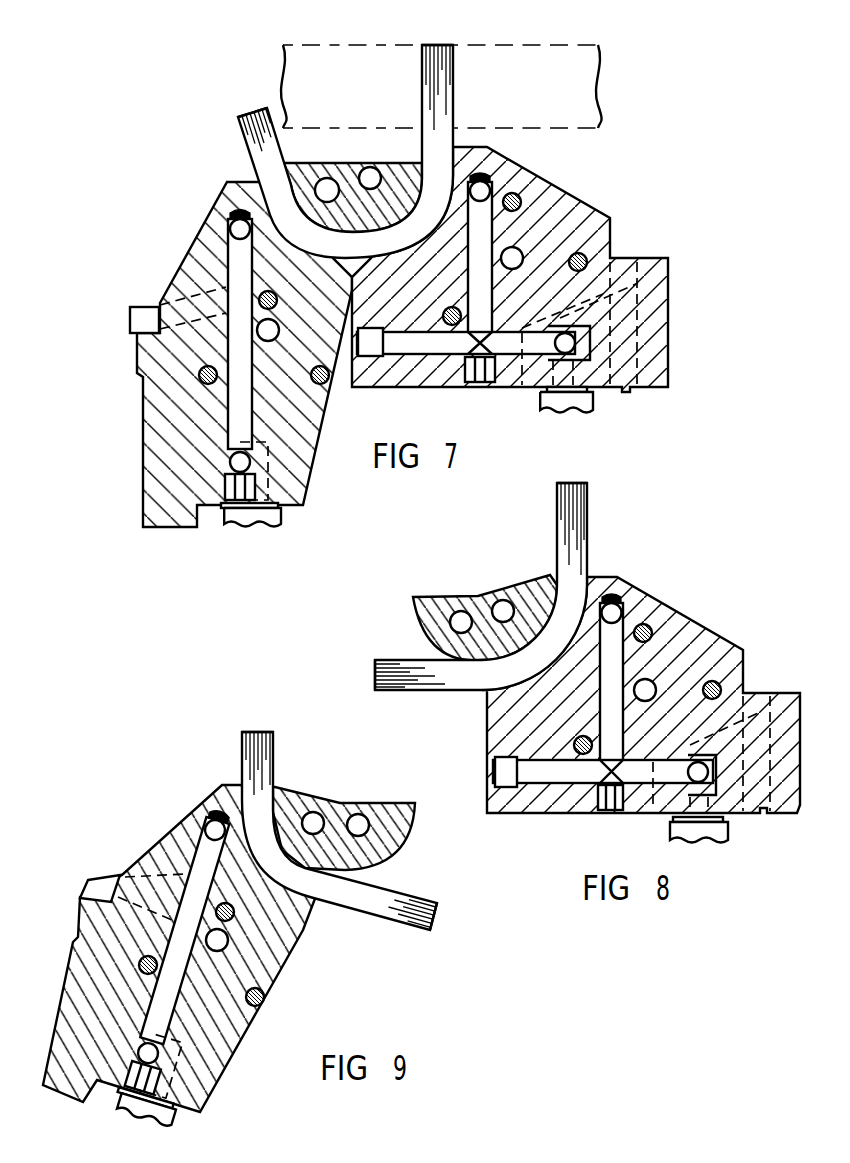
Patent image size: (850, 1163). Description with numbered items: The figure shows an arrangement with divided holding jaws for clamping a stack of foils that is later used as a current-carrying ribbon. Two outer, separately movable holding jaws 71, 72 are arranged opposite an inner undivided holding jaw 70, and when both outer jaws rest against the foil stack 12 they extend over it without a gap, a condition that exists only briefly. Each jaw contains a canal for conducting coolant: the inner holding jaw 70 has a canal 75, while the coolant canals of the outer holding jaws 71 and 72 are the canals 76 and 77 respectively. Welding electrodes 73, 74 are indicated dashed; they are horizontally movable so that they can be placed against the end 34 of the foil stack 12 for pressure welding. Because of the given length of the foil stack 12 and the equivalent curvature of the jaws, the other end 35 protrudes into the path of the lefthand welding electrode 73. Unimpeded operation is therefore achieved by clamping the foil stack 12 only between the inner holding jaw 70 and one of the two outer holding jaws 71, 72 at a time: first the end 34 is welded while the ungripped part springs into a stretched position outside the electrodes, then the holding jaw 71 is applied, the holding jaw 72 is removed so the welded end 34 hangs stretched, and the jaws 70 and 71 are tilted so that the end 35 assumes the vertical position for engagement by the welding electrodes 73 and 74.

In FIG. 7, the foil stack 12 is at (237, 143).
In FIG. 8, the foil stack 12 is at (556, 545).
In FIG. 9, the foil stack 12 is at (340, 908).
In FIG. 7, the end of the foil stack 34 is at (433, 55).
In FIG. 8, the end of the foil stack 34 is at (578, 493).
In FIG. 9, the end of the foil stack 34 is at (422, 912).
In FIG. 7, the end of the foil stack 35 is at (255, 112).
In FIG. 8, the end of the foil stack 35 is at (390, 662).
In FIG. 9, the end of the foil stack 35 is at (246, 745).
In FIG. 7, the inner holding jaw 70 is at (320, 162).
In FIG. 8, the inner holding jaw 70 is at (475, 581).
In FIG. 9, the inner holding jaw 70 is at (373, 804).
In FIG. 7, the outer holding jaw 71 is at (200, 240).
In FIG. 9, the outer holding jaw 71 is at (186, 814).
In FIG. 7, the outer holding jaw 72 is at (624, 196).
In FIG. 8, the outer holding jaw 72 is at (753, 626).
In FIG. 7, the welding electrode 73 is at (356, 60).
In FIG. 7, the welding electrode 74 is at (521, 58).
In FIG. 7, the canal 75 is at (370, 167).
In FIG. 7, the coolant canal 76 is at (247, 382).
In FIG. 9, the coolant canal 76 is at (187, 966).
In FIG. 7, the coolant canal 77 is at (476, 262).
In FIG. 8, the coolant canal 77 is at (610, 718).